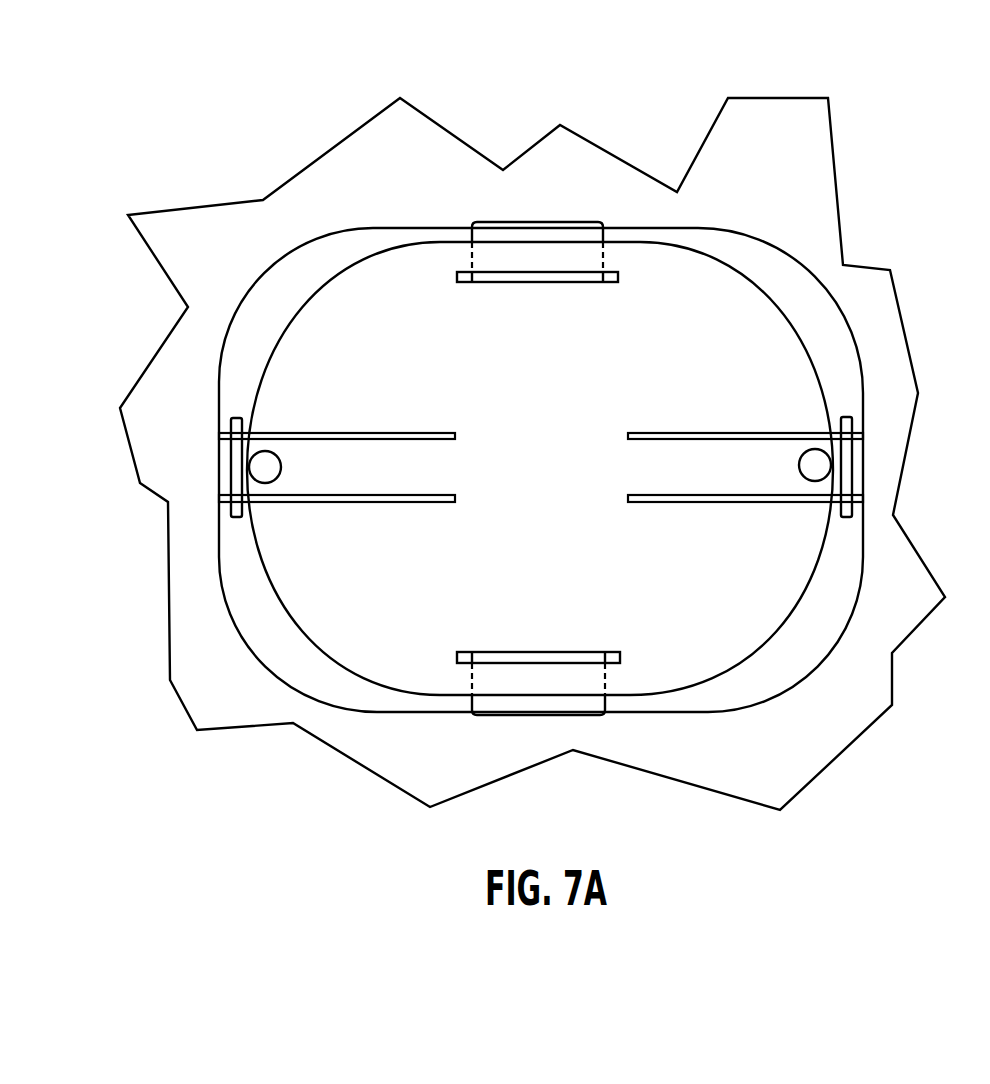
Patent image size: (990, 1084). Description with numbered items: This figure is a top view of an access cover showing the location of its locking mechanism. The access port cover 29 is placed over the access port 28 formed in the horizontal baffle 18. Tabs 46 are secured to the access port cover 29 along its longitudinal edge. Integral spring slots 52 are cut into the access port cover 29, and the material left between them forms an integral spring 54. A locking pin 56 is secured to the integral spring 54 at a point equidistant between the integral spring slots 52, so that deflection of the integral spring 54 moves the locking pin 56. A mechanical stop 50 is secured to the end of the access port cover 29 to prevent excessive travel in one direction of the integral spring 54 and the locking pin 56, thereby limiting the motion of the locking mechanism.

The horizontal baffle 18 is at (532, 454).
The access port 28 is at (494, 409).
The access port cover 29 is at (595, 470).
The tabs 46 is at (573, 413).
The mechanical stop 50 is at (908, 467).
The integral spring slots 52 is at (276, 480).
The integral spring 54 is at (796, 410).
The locking pin 56 is at (879, 510).